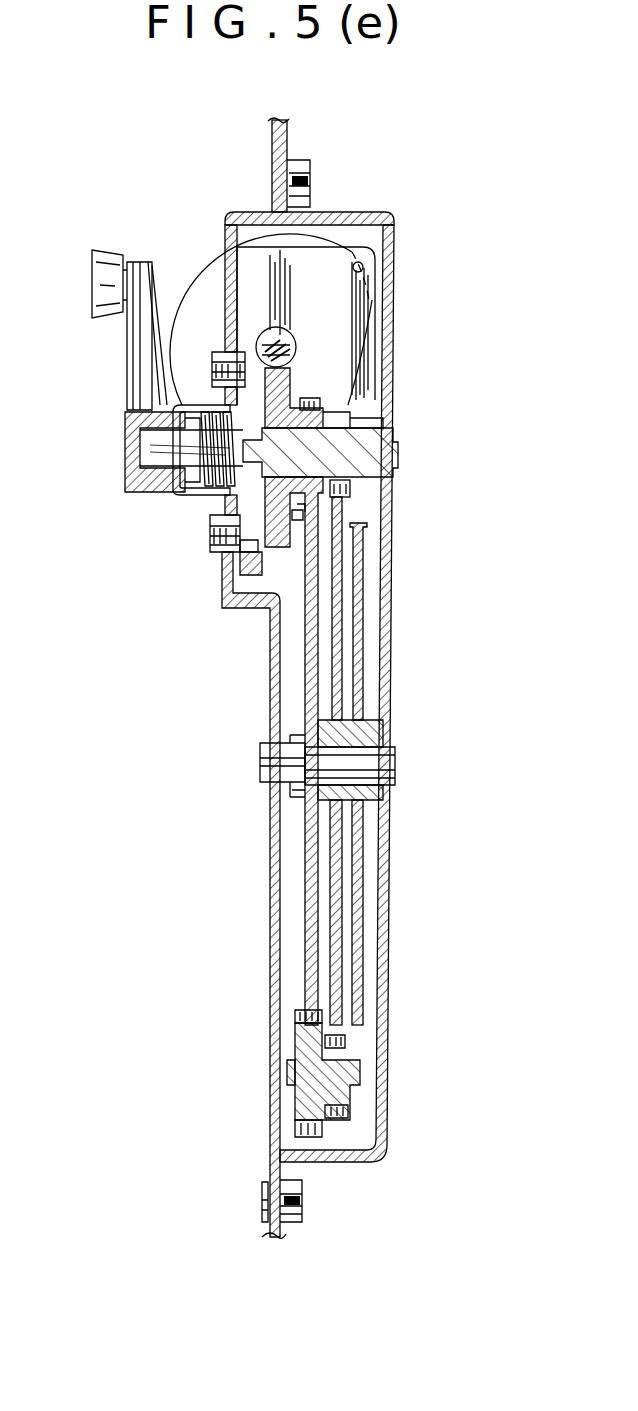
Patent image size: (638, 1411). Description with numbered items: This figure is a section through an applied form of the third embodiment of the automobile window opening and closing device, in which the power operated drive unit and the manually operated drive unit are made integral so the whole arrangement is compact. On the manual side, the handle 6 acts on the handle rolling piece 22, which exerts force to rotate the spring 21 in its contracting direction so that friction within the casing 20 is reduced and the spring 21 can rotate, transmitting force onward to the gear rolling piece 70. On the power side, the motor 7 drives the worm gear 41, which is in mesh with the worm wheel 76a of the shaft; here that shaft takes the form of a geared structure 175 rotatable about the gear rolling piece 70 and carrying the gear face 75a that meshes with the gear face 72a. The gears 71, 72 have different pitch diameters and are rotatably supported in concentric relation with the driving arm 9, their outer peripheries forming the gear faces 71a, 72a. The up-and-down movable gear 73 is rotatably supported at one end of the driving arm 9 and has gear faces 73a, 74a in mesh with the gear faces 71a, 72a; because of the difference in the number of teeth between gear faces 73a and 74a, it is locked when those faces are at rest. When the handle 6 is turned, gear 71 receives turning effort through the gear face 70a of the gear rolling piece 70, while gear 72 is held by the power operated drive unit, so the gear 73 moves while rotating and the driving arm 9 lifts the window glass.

The handle 6 is at (135, 375).
The motor 7 is at (312, 272).
The driving arm 9 is at (385, 597).
The casing 20 is at (185, 488).
The spring 21 is at (208, 492).
The handle rolling piece 22 is at (138, 450).
The worm gear 41 is at (288, 340).
The gear rolling piece 70 is at (380, 453).
The gear face 70a is at (350, 414).
The gear 71 is at (340, 702).
The gear face 71a is at (352, 490).
The gear 72 is at (305, 683).
The gear face 72a is at (300, 508).
The up-and-down movable gear 73 is at (330, 1048).
The gear face 73a is at (350, 1113).
The gear face 74a is at (318, 1137).
The gear face 75a is at (322, 396).
The worm wheel 76a is at (240, 578).
The geared structure 175 is at (238, 548).